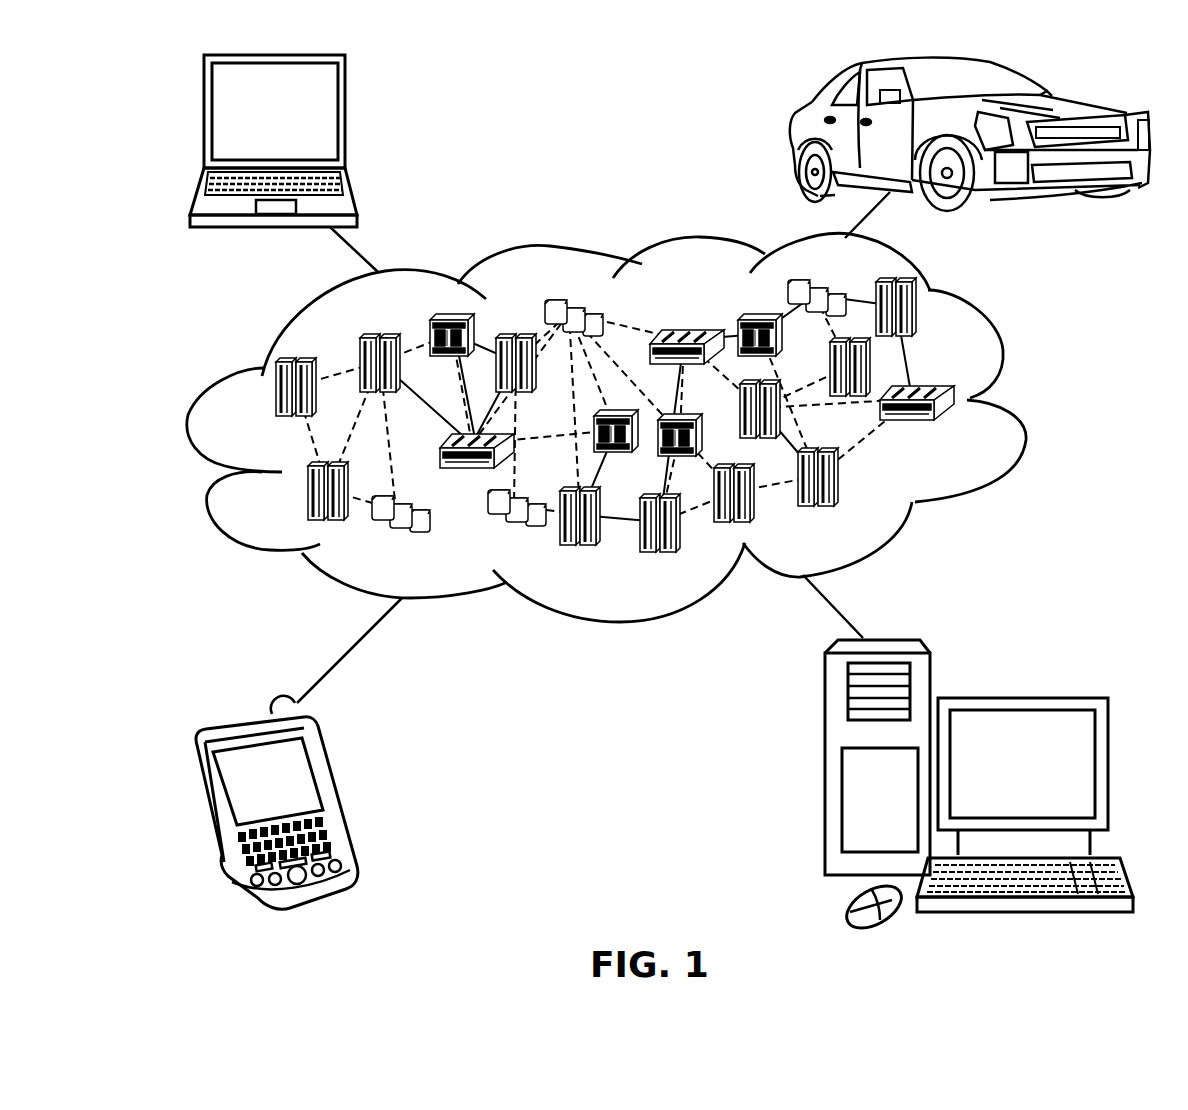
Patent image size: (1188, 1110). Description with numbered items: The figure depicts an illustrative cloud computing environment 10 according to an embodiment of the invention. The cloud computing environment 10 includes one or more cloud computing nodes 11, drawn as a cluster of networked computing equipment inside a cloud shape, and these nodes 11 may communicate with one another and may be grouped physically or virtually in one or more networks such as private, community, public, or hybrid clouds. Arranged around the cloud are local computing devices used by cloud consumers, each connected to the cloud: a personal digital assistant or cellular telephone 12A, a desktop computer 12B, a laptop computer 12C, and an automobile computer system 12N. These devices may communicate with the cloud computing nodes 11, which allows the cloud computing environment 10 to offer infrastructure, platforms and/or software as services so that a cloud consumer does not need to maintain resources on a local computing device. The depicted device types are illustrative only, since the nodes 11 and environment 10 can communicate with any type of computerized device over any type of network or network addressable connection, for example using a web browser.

The cloud computing environment 10 is at (637, 447).
The cloud computing nodes 11 is at (958, 432).
The personal digital assistant (PDA) or cellular telephone 12A is at (335, 790).
The desktop computer 12B is at (1020, 698).
The laptop computer 12C is at (345, 120).
The automobile computer system 12N is at (797, 140).